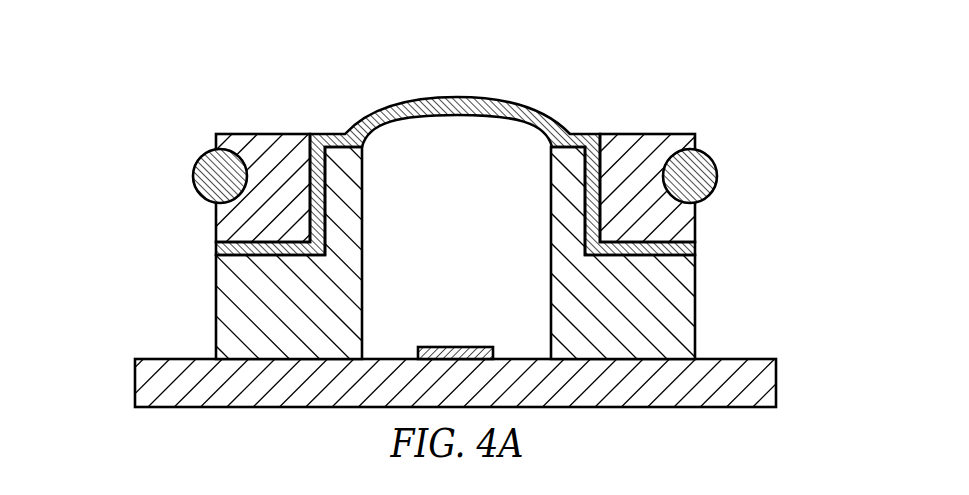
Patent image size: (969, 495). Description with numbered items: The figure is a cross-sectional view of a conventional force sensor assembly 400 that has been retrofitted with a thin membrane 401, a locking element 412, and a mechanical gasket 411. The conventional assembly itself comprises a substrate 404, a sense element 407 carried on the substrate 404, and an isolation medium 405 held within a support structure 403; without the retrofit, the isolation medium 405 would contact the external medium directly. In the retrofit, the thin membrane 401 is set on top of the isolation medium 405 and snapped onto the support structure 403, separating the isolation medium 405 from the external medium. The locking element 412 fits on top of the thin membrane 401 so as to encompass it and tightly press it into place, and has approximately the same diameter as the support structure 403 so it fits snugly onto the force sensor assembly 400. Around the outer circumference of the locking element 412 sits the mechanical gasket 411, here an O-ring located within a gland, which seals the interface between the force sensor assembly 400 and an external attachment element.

The force sensor assembly 400 is at (128, 38).
The thin membrane 401 is at (511, 102).
The support structure 403 is at (686, 300).
The substrate 404 is at (776, 383).
The isolation medium 405 is at (439, 208).
The sense element 407 is at (452, 346).
The mechanical gasket 411 is at (711, 160).
The locking element 412 is at (648, 136).